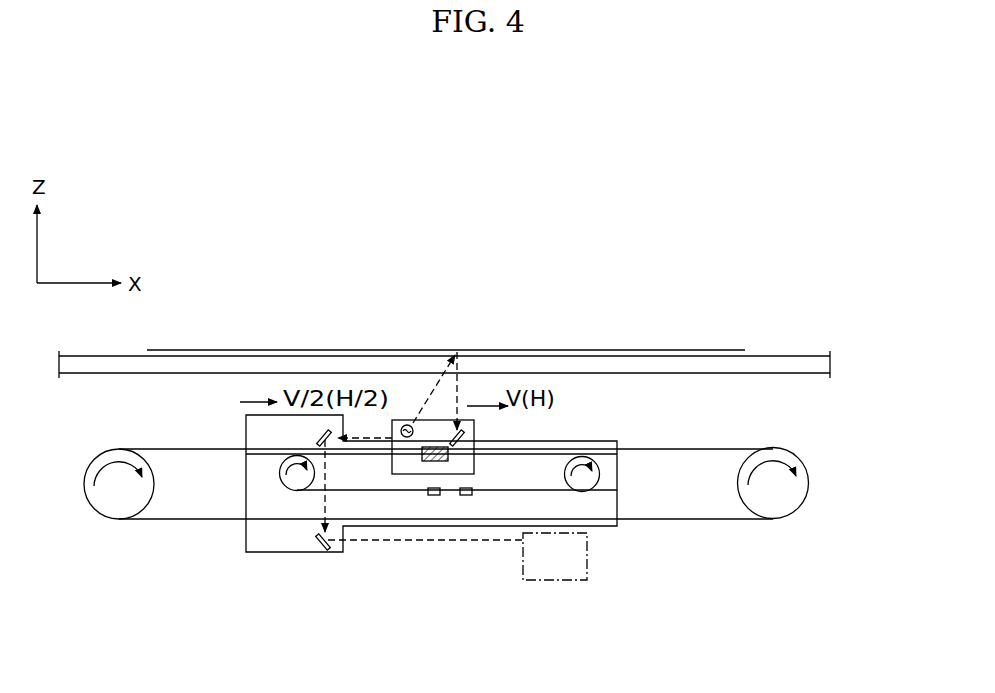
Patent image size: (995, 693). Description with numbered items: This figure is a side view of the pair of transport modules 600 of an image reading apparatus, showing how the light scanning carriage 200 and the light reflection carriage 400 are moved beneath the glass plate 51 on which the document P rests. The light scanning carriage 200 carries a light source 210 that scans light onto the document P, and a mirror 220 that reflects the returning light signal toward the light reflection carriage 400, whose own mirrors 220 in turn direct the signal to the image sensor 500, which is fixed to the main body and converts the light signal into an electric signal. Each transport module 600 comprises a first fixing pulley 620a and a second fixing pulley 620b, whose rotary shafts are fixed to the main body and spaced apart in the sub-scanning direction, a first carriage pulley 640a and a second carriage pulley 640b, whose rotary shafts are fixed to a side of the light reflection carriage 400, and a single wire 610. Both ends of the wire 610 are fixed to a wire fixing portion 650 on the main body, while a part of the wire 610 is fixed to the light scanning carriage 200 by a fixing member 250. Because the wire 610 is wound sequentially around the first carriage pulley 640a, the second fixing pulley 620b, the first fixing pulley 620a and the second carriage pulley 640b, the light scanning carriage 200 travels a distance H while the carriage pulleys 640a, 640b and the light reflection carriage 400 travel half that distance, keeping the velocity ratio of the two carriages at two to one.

The document P is at (716, 349).
The glass plate 51 is at (775, 365).
The light scanning carriage 200 is at (467, 419).
The light source 210 is at (405, 425).
The mirror 220 is at (318, 435).
The fixing member 250 is at (433, 447).
The light reflection carriage 400 is at (290, 548).
The image sensor 500 is at (557, 570).
The transport module 600 is at (820, 480).
The wire 610 is at (692, 521).
The first fixing pulley 620a is at (119, 512).
The second fixing pulley 620b is at (773, 511).
The first carriage pulley 640a is at (291, 487).
The second carriage pulley 640b is at (590, 488).
The wire fixing portion 650 is at (467, 497).